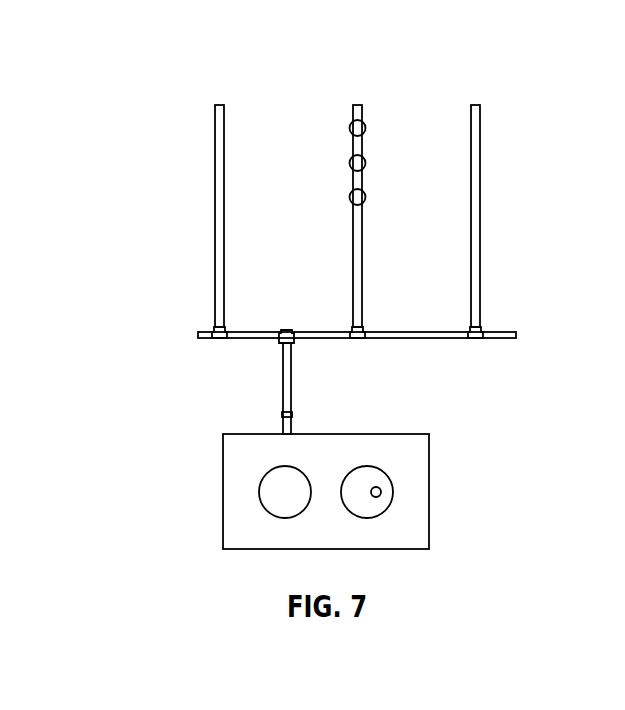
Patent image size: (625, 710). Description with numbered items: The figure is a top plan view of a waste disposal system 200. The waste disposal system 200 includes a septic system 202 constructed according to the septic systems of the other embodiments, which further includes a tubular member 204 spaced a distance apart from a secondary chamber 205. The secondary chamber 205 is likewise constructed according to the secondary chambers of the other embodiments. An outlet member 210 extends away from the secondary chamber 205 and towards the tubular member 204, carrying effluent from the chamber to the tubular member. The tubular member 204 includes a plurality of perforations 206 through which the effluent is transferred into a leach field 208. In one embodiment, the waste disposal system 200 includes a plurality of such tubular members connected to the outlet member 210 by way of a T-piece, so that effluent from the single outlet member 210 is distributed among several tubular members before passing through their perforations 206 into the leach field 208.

The waste disposal system 200 is at (132, 36).
The septic system 202 is at (481, 215).
The tubular member 204 is at (362, 240).
The secondary chamber 205 is at (265, 474).
The perforations 206 is at (364, 128).
The leach field 208 is at (288, 94).
The outlet member 210 is at (292, 397).